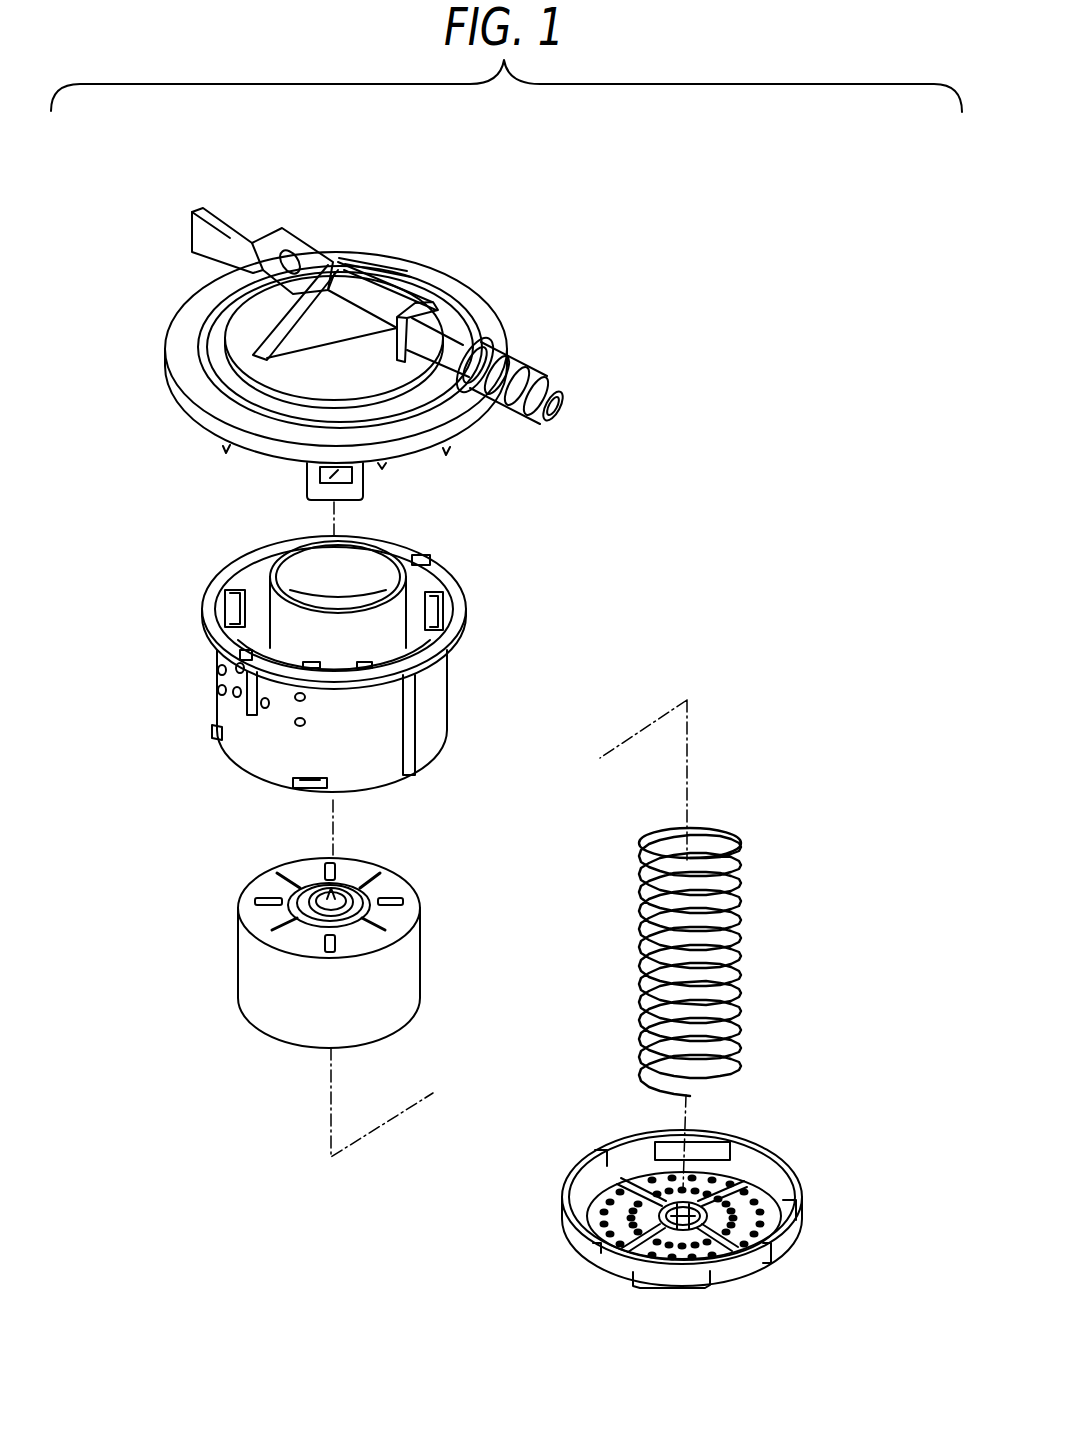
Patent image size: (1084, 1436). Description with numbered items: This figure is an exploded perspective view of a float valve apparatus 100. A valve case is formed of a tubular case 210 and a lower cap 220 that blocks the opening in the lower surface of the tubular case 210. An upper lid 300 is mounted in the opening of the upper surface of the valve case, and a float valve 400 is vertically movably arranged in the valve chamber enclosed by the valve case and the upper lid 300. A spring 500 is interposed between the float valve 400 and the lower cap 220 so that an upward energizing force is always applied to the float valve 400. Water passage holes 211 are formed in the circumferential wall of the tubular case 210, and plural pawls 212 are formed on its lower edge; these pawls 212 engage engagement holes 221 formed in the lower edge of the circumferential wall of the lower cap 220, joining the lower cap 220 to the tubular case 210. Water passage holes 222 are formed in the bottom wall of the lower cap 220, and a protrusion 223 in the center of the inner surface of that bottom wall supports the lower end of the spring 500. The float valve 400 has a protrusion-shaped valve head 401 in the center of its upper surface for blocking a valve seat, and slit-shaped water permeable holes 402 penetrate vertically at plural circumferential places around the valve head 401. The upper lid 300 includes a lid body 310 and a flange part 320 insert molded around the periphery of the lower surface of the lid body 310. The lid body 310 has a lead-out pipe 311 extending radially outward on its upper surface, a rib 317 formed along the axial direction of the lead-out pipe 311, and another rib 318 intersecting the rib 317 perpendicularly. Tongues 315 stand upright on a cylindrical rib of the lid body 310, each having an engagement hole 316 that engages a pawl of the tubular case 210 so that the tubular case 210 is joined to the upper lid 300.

The float valve apparatus 100 is at (522, 220).
The upper lid 300 is at (380, 238).
The lid body 310 is at (237, 358).
The lead-out pipe 311 is at (556, 388).
The tongue 315 is at (366, 488).
The engagement hole 316 is at (323, 476).
The rib 317 is at (230, 222).
The rib 318 is at (264, 322).
The flange part 320 is at (500, 312).
The tubular case 210 is at (452, 673).
The water passage holes 211 is at (297, 720).
The pawls 212 is at (307, 787).
The lower cap 220 is at (583, 1275).
The engagement holes 221 is at (713, 1150).
The water passage holes 222 is at (712, 1253).
The protrusion 223 is at (690, 1210).
The float valve 400 is at (258, 1032).
The valve head 401 is at (347, 890).
The water permeable holes 402 is at (393, 898).
The spring 500 is at (750, 935).